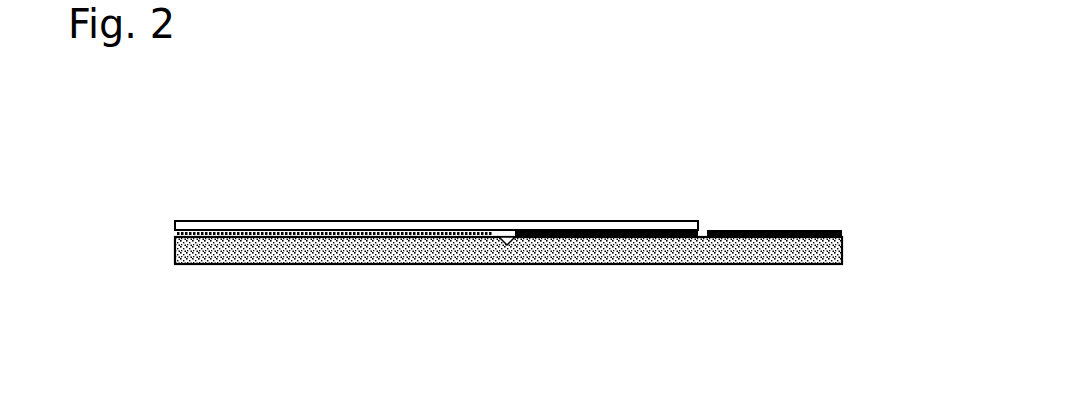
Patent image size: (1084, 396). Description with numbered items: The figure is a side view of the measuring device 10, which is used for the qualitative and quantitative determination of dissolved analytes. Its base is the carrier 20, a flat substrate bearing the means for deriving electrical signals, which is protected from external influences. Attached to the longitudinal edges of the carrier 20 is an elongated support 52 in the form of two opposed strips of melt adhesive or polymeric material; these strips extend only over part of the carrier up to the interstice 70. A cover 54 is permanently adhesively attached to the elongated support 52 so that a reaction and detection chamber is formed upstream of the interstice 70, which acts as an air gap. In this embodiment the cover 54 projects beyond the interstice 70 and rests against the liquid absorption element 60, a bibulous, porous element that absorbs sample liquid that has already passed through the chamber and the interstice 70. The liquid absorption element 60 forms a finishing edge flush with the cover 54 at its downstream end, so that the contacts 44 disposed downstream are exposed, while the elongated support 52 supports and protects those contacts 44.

The measuring device 10 is at (152, 197).
The carrier 20 is at (278, 248).
The contacts 44 is at (764, 231).
The elongated support 52 is at (256, 232).
The cover 54 is at (212, 221).
The liquid absorption element 60 is at (595, 230).
The interstice 70 is at (507, 245).